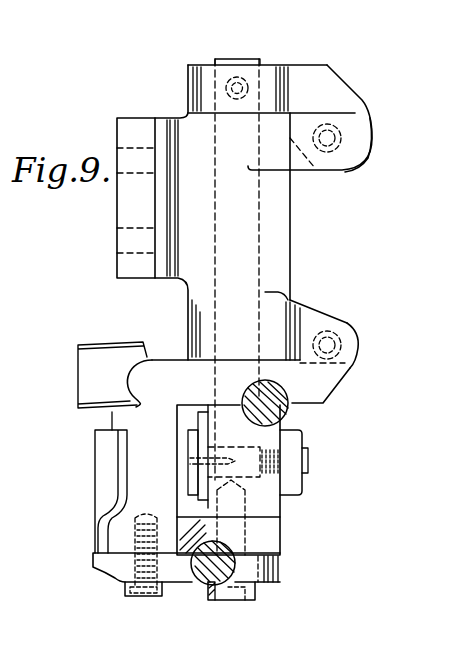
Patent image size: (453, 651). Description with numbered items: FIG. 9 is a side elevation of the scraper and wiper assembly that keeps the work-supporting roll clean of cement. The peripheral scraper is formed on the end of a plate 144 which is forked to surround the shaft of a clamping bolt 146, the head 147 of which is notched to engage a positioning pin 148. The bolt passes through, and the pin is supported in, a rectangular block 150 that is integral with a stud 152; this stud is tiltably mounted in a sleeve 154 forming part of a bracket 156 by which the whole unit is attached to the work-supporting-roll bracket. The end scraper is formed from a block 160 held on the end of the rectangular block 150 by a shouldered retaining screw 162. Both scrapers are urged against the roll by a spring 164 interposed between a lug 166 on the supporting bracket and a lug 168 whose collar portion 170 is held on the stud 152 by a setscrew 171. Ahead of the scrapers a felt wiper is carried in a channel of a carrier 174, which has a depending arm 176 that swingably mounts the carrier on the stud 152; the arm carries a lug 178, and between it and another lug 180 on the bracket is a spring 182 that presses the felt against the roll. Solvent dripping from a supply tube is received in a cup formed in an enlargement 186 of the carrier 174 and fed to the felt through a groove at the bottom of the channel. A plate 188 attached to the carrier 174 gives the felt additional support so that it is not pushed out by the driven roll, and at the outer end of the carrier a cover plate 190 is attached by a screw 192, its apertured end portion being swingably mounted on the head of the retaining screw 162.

The plate 144 is at (205, 425).
The clamping bolt 146 is at (310, 462).
The head 147 is at (195, 445).
The positioning pin 148 is at (192, 460).
The rectangular block 150 is at (262, 437).
The stud 152 is at (260, 233).
The sleeve 154 is at (285, 262).
The bracket 156 is at (122, 207).
The block 160 is at (272, 536).
The shouldered retaining screw 162 is at (258, 598).
The spring 164 is at (340, 148).
The lug 166 is at (293, 150).
The lug 168 is at (332, 95).
The collar portion 170 is at (265, 70).
The setscrew 171 is at (237, 78).
The carrier 174 is at (125, 416).
The depending arm 176 is at (182, 375).
The lug 178 is at (340, 378).
The lug 180 is at (312, 310).
The spring 182 is at (338, 335).
The enlargement 186 is at (107, 333).
The plate 188 is at (100, 505).
The cover plate 190 is at (122, 567).
The screw 192 is at (150, 587).